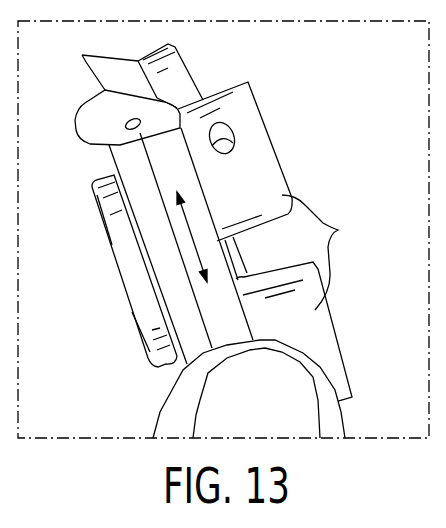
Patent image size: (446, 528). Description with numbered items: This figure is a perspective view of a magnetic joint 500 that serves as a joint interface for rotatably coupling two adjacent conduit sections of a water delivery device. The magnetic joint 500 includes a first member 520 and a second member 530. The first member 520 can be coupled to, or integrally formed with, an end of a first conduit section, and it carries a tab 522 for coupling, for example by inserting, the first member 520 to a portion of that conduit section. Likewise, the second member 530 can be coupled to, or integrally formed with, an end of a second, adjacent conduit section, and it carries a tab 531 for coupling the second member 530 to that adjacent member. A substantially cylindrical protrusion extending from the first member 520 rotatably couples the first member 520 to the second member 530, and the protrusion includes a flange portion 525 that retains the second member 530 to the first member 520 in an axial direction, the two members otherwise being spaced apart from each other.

The magnetic joint 500 is at (303, 129).
The first member 520 is at (180, 55).
The tab 522 is at (280, 241).
The flange portion 525 is at (138, 311).
The second member 530 is at (225, 330).
The tab 531 is at (90, 110).